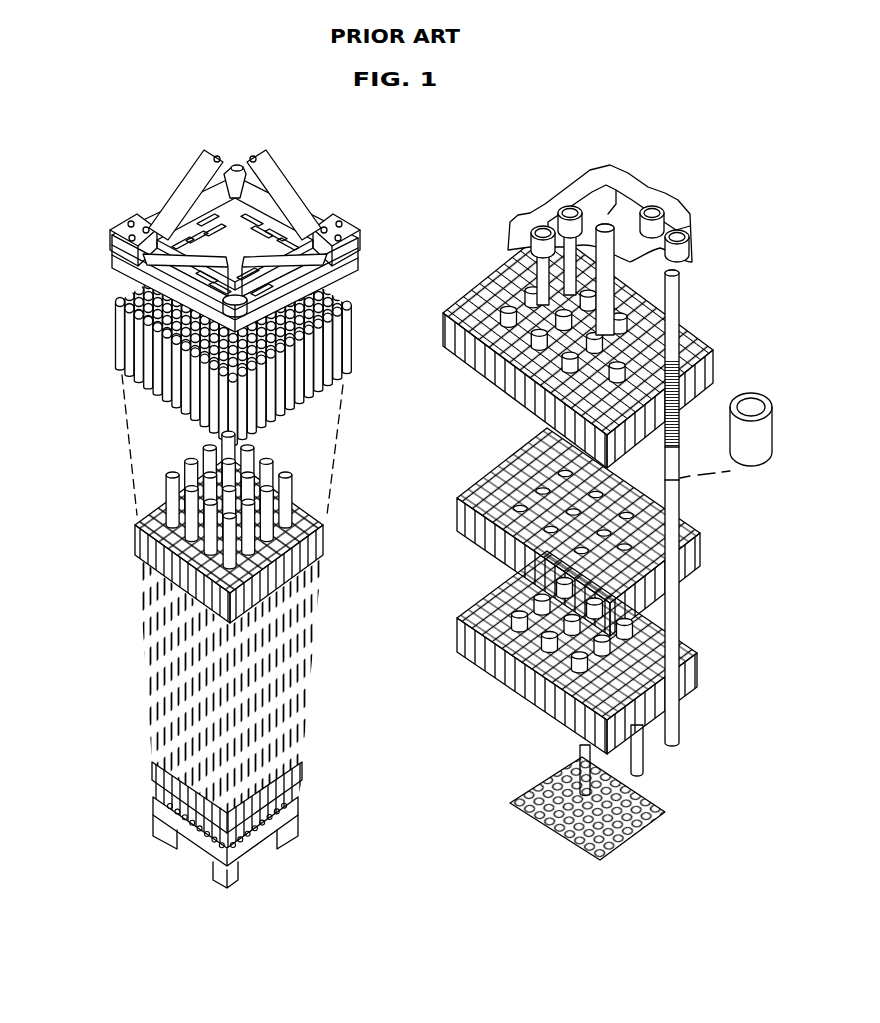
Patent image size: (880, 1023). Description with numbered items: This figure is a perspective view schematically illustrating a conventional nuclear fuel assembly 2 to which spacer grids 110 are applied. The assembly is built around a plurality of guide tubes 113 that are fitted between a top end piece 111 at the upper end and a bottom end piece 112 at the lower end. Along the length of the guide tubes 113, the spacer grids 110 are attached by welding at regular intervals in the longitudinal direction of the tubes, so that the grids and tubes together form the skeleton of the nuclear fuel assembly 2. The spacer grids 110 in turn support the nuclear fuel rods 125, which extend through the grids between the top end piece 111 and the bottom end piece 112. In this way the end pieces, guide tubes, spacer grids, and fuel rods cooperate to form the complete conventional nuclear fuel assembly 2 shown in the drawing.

The nuclear fuel assembly 2 is at (448, 197).
The spacer grid 110 is at (490, 360).
The top end piece 111 is at (350, 267).
The bottom end piece 112 is at (290, 822).
The guide tube 113 is at (173, 495).
The nuclear fuel rod 125 is at (350, 330).